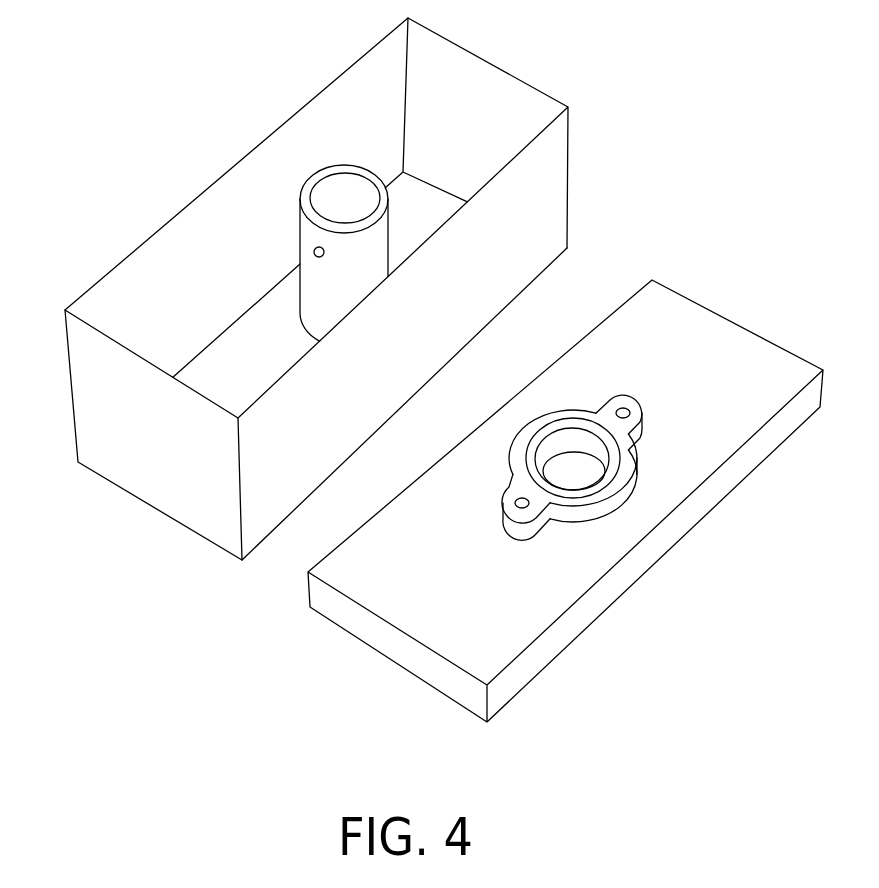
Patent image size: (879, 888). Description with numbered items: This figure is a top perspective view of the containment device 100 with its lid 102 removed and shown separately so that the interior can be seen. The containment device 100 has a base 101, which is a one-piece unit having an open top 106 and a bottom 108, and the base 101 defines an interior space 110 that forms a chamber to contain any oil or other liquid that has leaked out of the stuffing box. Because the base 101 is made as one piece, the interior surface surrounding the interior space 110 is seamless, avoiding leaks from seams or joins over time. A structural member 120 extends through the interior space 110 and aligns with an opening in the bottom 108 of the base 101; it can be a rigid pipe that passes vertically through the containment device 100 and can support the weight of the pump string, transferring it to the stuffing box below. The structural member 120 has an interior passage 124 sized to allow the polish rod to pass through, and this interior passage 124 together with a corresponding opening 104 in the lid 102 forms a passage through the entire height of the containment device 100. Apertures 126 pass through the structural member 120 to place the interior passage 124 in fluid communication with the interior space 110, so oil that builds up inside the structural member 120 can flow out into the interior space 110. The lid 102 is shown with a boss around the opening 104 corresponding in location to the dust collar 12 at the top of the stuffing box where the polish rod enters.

The containment device 100 is at (600, 108).
The base 101 is at (128, 445).
The lid 102 is at (698, 334).
The opening 104 is at (625, 476).
The open top 106 is at (133, 292).
The bottom 108 is at (227, 553).
The interior space 110 is at (248, 350).
The structural member 120 is at (333, 167).
The interior passage 124 is at (378, 214).
The apertures 126 is at (314, 252).
The dust collar 12 is at (562, 495).